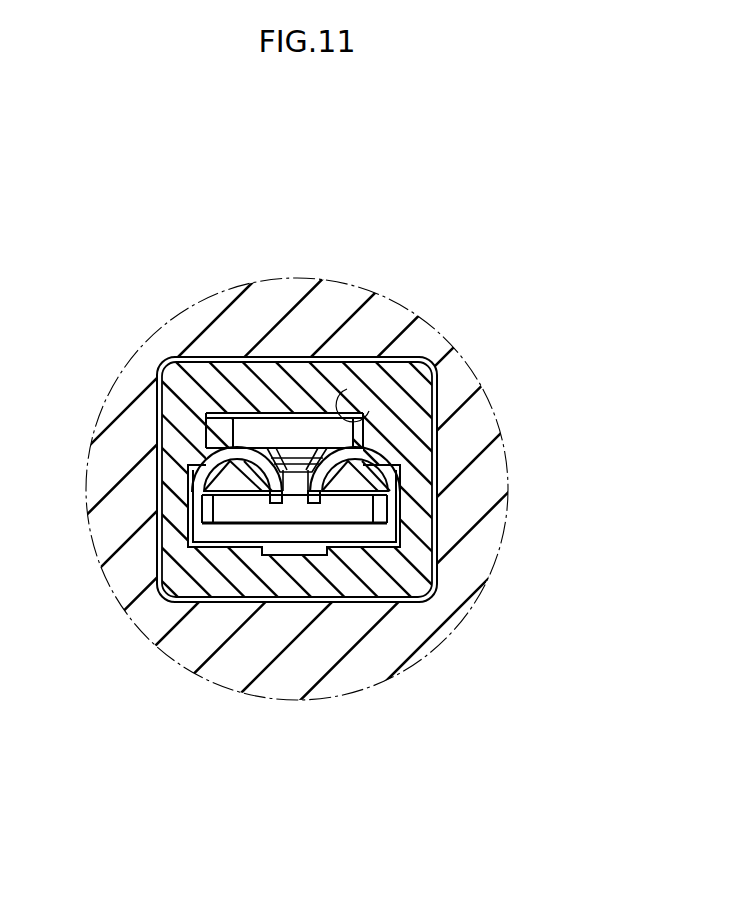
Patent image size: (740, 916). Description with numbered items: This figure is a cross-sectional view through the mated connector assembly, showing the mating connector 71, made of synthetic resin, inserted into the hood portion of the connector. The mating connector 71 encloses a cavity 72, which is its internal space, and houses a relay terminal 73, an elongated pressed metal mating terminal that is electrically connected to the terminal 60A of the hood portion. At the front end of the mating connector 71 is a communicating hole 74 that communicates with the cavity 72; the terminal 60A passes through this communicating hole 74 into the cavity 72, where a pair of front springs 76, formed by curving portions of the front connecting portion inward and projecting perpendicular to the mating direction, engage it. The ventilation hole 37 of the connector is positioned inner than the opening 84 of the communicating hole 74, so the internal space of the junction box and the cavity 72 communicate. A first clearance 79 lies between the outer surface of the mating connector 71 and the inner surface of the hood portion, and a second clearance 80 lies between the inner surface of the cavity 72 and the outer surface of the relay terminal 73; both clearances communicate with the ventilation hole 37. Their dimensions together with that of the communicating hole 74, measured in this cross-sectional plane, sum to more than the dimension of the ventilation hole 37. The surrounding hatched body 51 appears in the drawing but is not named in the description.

The ventilation hole 37 is at (256, 410).
The body 51 is at (327, 307).
The opening 84 is at (338, 404).
The communicating hole 74 is at (214, 436).
The front springs 76 is at (200, 475).
The first clearance 79 is at (188, 546).
The mating connector 71 is at (412, 545).
The second clearance 80 is at (186, 528).
The terminal 60A is at (230, 507).
The relay terminal 73 is at (247, 533).
The cavity 72 is at (310, 548).